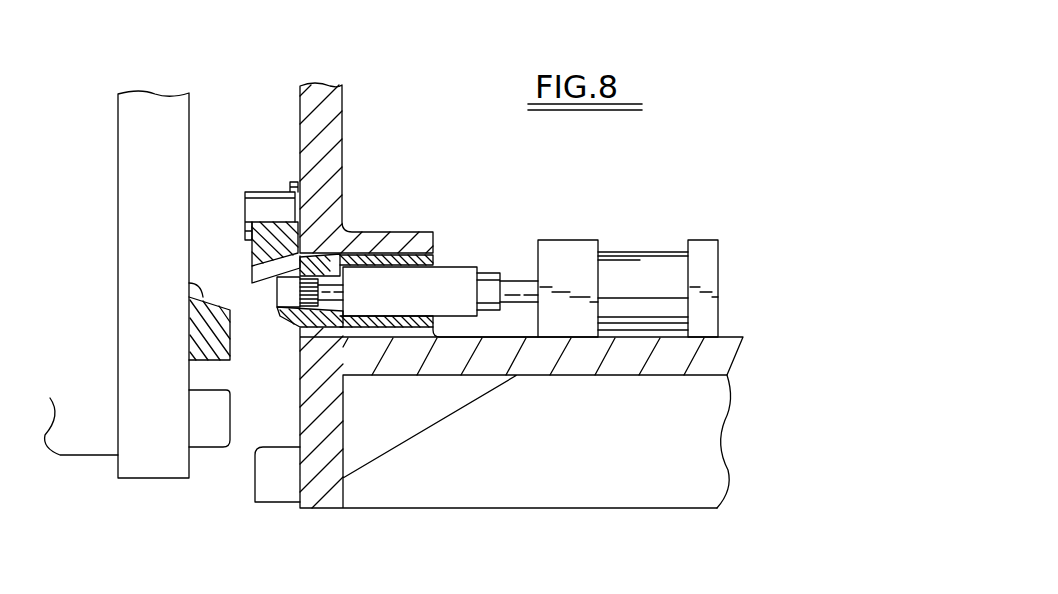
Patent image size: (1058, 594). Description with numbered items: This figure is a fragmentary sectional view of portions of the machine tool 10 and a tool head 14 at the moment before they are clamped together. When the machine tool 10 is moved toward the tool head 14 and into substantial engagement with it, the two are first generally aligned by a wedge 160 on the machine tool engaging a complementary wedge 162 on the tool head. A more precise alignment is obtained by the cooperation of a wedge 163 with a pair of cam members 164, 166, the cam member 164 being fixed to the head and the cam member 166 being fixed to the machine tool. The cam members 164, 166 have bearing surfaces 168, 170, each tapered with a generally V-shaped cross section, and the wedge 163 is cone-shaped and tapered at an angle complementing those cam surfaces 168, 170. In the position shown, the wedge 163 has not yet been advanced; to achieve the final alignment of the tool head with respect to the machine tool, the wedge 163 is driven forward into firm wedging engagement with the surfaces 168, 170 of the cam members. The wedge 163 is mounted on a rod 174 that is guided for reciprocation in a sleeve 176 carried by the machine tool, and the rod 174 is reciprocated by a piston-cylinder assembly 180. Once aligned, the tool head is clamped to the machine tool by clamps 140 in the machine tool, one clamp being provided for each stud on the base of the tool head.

The machine tool 10 is at (335, 112).
The tool head 14 is at (155, 97).
The clamp 140 is at (270, 189).
The wedge 160 is at (278, 497).
The complementary wedge 162 is at (214, 450).
The wedge 163 is at (282, 318).
The cam member 164 is at (208, 338).
The cam member 166 is at (263, 237).
The bearing surface 168 is at (202, 293).
The bearing surface 170 is at (252, 285).
The rod 174 is at (507, 280).
The sleeve 176 is at (387, 255).
The piston-cylinder assembly 180 is at (653, 250).